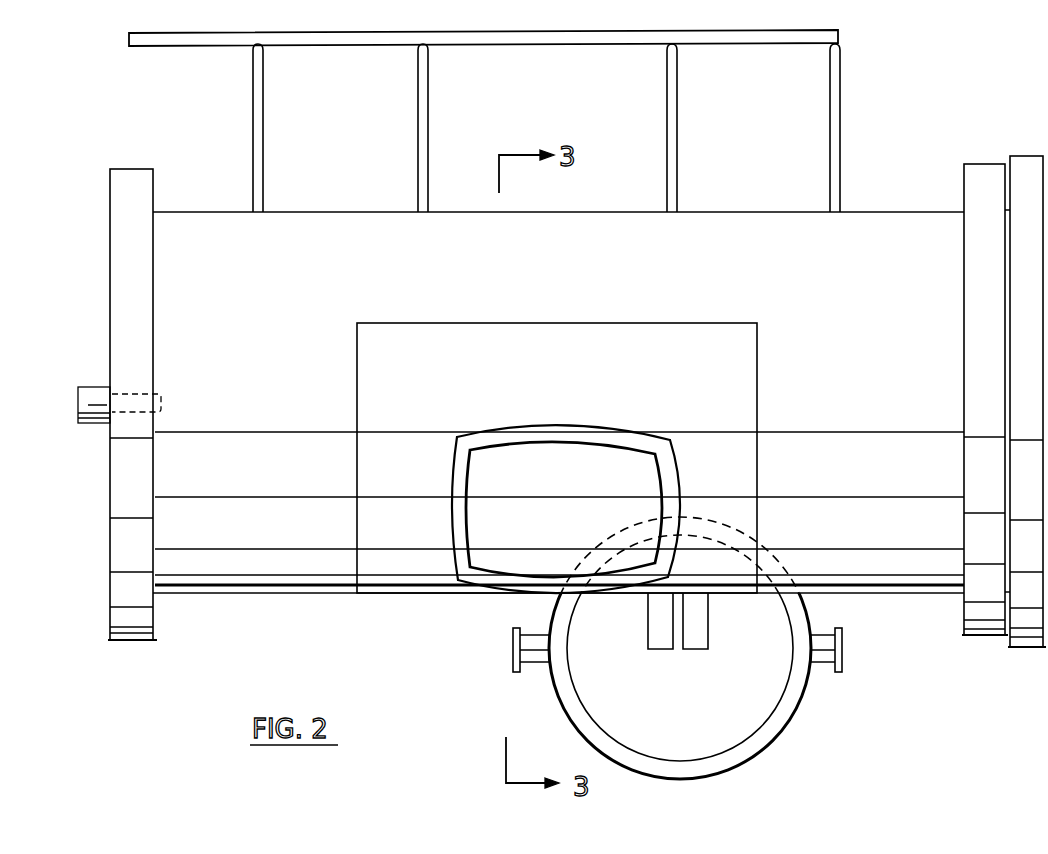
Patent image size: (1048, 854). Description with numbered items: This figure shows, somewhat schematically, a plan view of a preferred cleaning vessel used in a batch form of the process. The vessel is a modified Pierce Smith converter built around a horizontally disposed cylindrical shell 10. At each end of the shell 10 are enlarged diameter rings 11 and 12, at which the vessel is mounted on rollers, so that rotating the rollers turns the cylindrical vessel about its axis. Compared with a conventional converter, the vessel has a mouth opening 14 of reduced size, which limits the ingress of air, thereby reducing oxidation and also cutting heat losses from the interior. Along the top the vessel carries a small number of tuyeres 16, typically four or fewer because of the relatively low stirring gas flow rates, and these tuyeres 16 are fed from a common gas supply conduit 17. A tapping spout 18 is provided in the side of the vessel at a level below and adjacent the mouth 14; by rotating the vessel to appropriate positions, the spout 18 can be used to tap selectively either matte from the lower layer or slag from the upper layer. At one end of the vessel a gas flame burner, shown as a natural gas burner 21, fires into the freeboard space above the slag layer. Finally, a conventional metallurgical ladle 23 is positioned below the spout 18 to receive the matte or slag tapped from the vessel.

The cylindrical shell 10 is at (255, 582).
The enlarged diameter ring 11 is at (140, 630).
The enlarged diameter ring 12 is at (993, 622).
The mouth opening 14 is at (468, 500).
The tuyeres 16 is at (262, 120).
The common gas supply conduit 17 is at (172, 46).
The tapping spout 18 is at (661, 637).
The natural gas burner 21 is at (98, 425).
The metallurgical ladle 23 is at (568, 705).